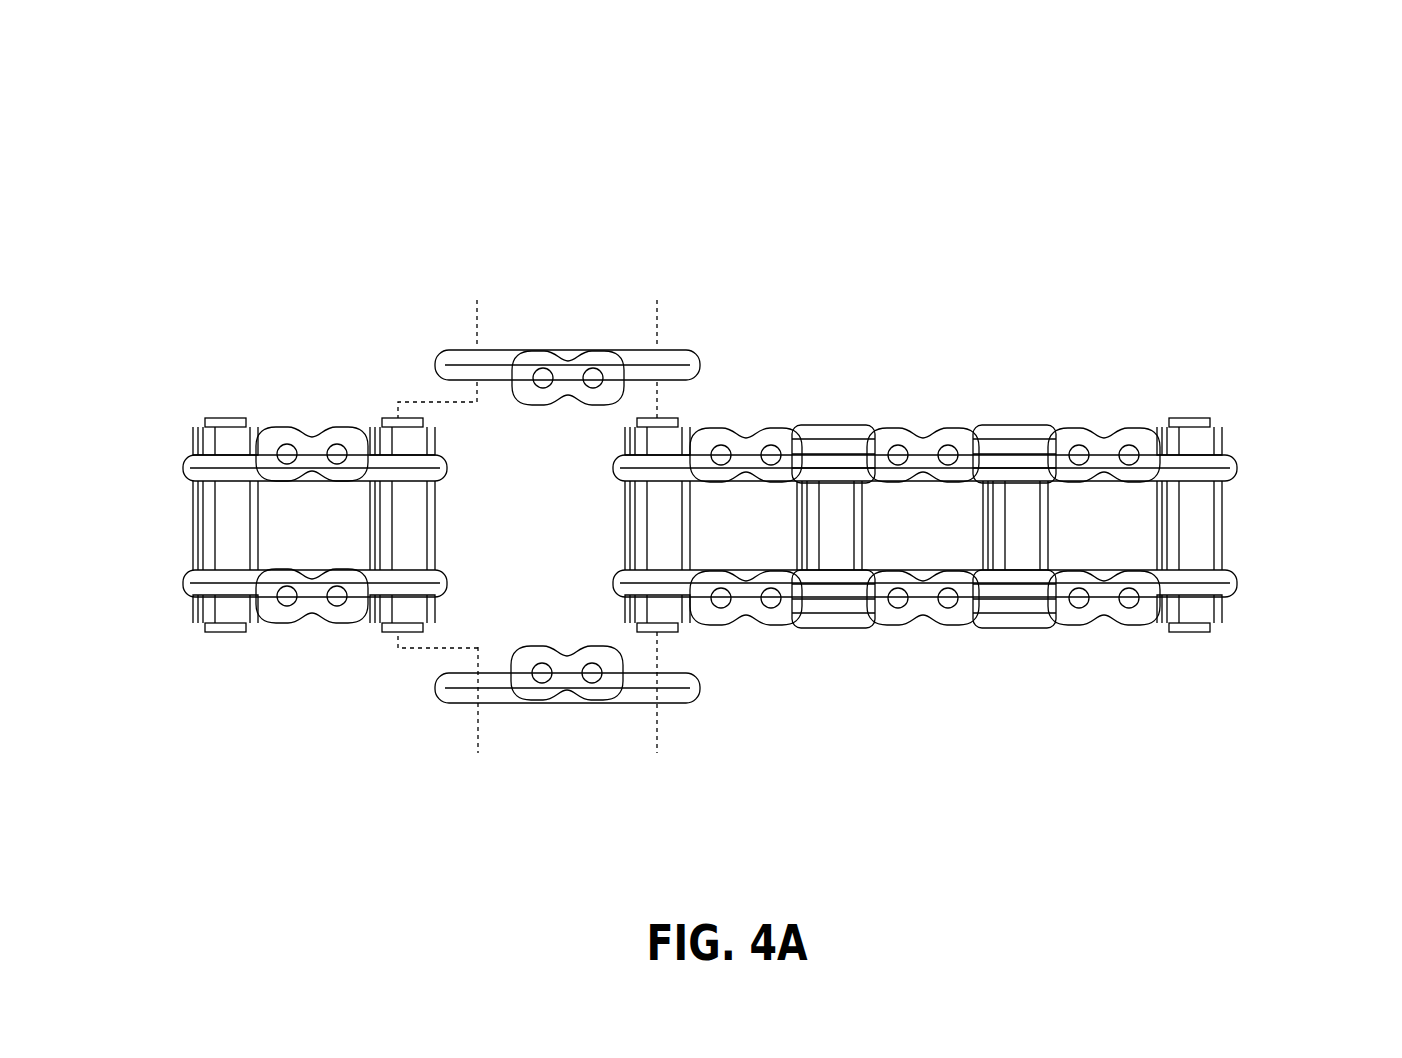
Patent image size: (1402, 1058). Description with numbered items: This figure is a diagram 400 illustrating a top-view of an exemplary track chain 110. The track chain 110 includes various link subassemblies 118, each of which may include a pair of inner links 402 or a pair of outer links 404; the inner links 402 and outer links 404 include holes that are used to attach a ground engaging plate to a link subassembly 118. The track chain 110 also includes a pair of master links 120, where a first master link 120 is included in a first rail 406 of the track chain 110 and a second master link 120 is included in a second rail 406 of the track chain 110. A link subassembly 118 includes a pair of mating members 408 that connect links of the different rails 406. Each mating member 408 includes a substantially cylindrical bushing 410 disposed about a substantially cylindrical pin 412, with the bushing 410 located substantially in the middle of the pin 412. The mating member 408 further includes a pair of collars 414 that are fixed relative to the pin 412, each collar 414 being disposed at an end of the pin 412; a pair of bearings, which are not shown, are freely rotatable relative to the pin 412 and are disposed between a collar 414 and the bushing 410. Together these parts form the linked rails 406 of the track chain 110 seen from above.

The diagram 400 is at (219, 67).
The track chain 110 is at (1316, 358).
The link subassembly 118 is at (329, 344).
The master link 120 is at (559, 339).
The inner link 402 is at (748, 425).
The outer link 404 is at (890, 425).
The rail 406 is at (182, 466).
The mating member 408 is at (202, 405).
The bushing 410 is at (192, 540).
The pin 412 is at (217, 417).
The collar 414 is at (440, 436).